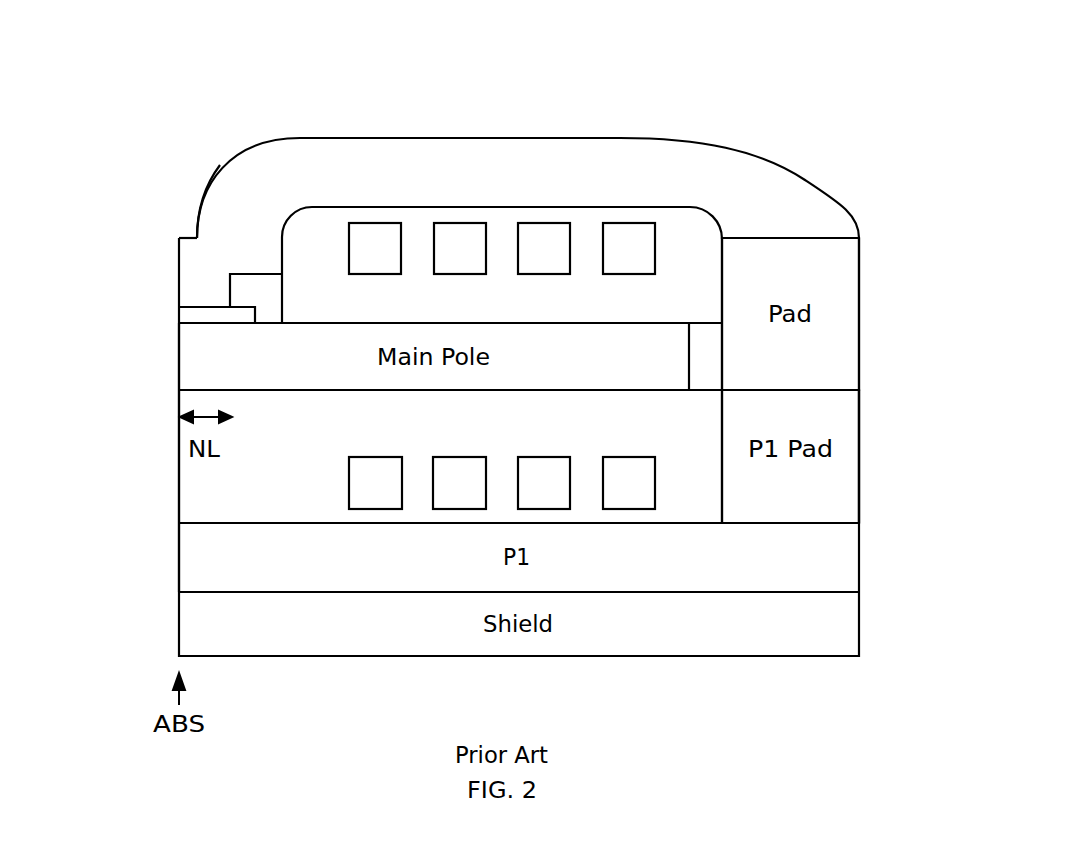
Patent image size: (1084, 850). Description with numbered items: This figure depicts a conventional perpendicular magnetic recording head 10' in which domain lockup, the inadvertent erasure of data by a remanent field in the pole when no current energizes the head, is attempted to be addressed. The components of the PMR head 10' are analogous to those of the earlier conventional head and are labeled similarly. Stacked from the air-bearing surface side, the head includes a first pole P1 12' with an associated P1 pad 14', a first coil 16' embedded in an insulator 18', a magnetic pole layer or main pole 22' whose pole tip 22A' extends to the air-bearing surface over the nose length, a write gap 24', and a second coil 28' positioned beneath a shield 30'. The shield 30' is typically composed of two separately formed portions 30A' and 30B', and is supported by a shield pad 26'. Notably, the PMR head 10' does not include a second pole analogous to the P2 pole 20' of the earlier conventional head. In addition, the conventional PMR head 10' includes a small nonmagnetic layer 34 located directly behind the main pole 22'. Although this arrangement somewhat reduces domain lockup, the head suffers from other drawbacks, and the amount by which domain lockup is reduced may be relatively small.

The PMR head 10' is at (501, 22).
The first pole (P1) 12' is at (154, 551).
The P1 pad 14' is at (885, 478).
The first coil 16' is at (553, 579).
The insulator 18' is at (154, 456).
The P1 pad 20' is at (817, 456).
The main pole 22' is at (190, 274).
The main pole tip 22A' is at (138, 366).
The write gap 24' is at (191, 290).
The shield pad 26' is at (816, 309).
The second coil 28' is at (535, 200).
The shield 30' is at (528, 165).
The yoke front portion 30A' is at (152, 199).
The yoke top portion 30B' is at (498, 99).
The nonmagnetic layer 34 is at (705, 391).